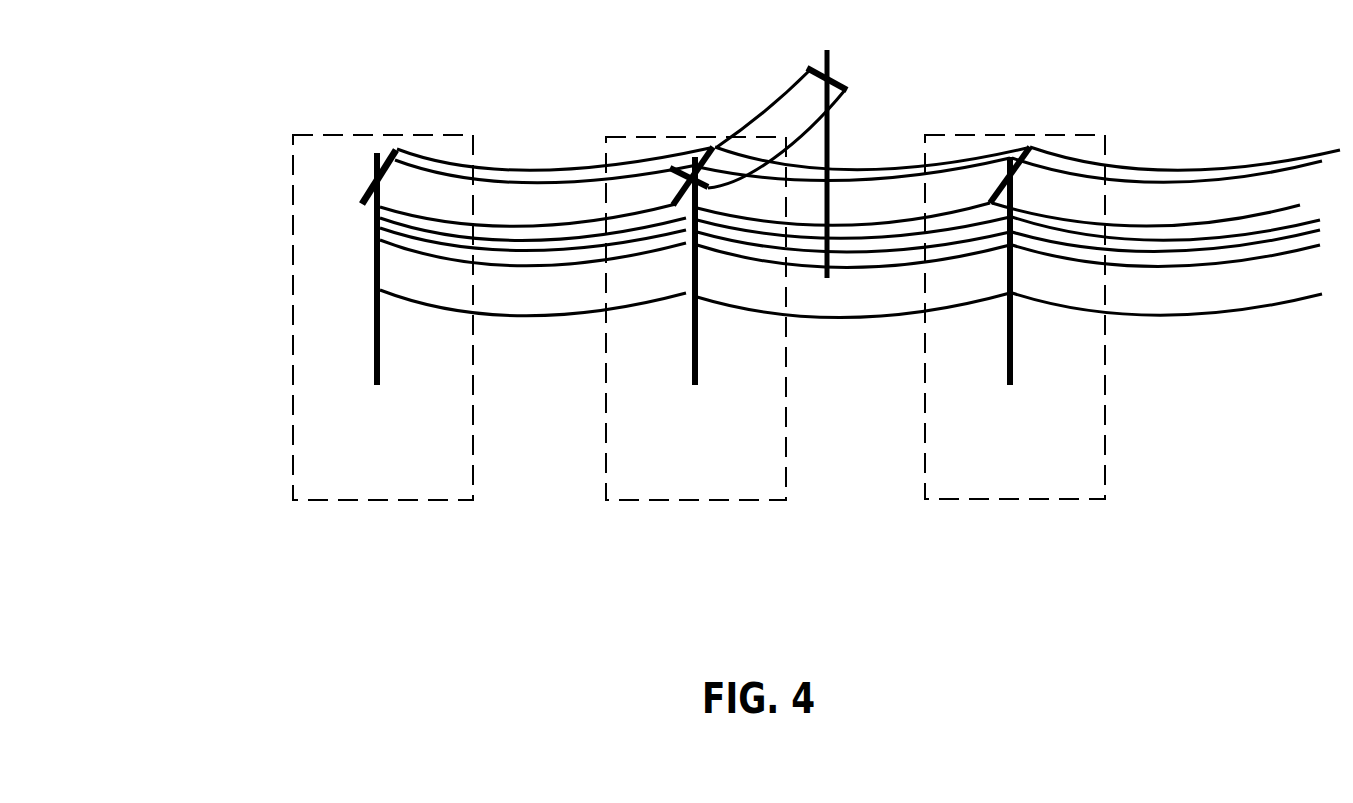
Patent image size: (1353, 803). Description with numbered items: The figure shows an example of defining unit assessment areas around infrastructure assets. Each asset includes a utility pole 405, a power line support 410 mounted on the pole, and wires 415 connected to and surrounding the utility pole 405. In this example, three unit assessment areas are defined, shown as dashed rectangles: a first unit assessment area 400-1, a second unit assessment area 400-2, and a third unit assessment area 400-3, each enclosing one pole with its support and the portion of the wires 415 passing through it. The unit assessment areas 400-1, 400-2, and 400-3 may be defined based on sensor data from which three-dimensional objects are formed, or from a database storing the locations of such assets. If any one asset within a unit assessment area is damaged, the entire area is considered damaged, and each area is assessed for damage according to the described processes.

The unit assessment area 400-1 is at (318, 122).
The unit assessment area 400-2 is at (628, 122).
The unit assessment area 400-3 is at (1074, 122).
The utility pole 405 is at (378, 273).
The power line support 410 is at (378, 177).
The wires 415 is at (543, 155).